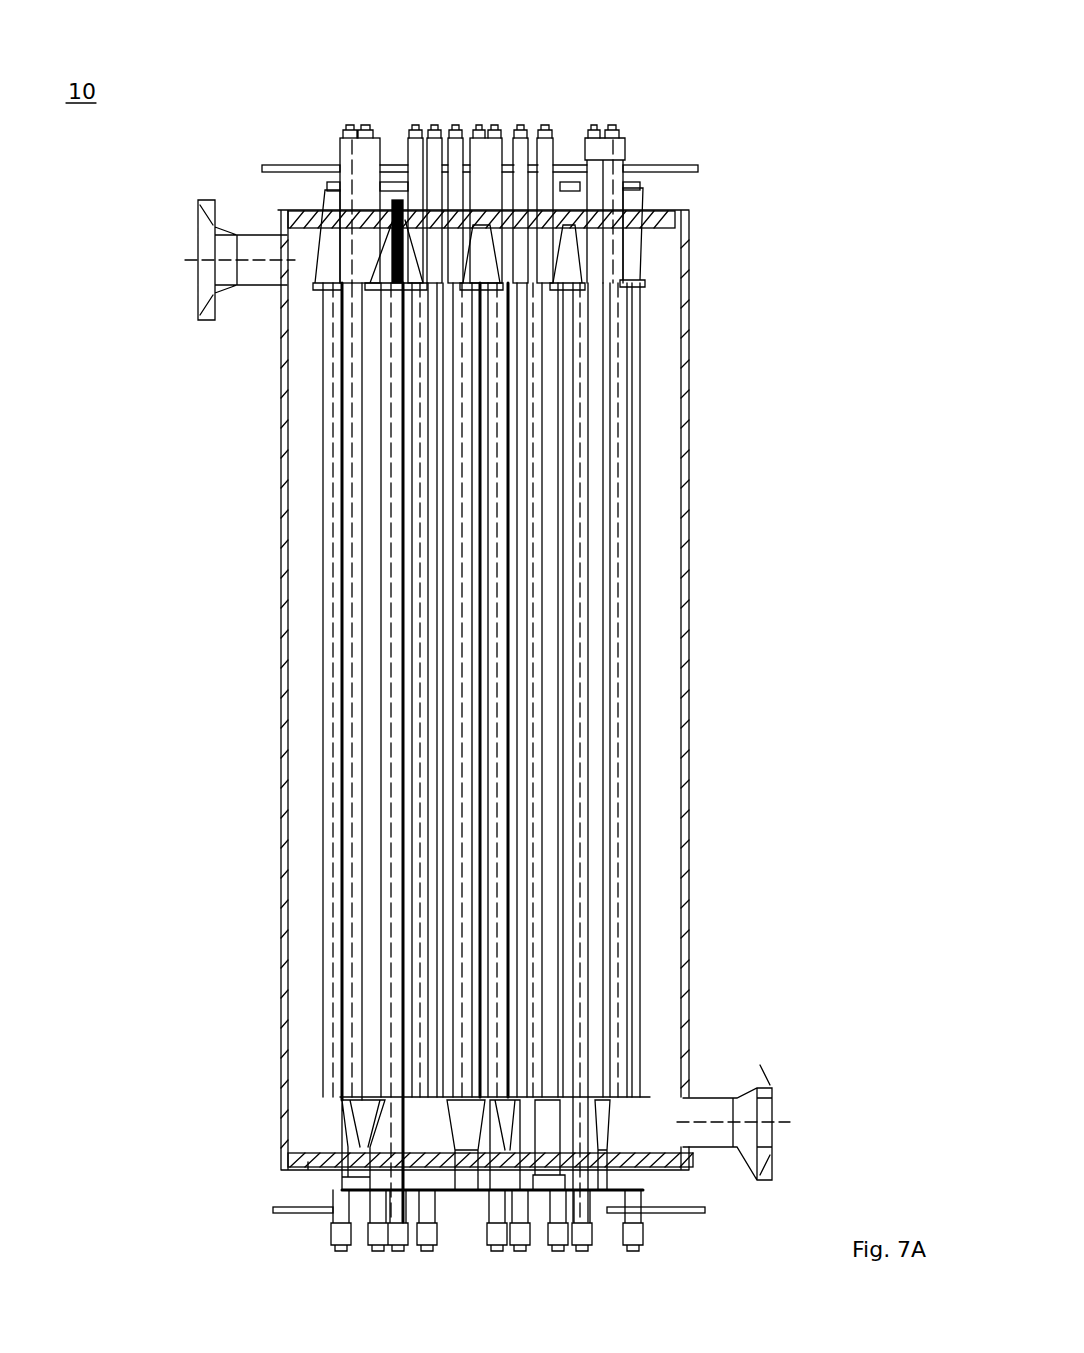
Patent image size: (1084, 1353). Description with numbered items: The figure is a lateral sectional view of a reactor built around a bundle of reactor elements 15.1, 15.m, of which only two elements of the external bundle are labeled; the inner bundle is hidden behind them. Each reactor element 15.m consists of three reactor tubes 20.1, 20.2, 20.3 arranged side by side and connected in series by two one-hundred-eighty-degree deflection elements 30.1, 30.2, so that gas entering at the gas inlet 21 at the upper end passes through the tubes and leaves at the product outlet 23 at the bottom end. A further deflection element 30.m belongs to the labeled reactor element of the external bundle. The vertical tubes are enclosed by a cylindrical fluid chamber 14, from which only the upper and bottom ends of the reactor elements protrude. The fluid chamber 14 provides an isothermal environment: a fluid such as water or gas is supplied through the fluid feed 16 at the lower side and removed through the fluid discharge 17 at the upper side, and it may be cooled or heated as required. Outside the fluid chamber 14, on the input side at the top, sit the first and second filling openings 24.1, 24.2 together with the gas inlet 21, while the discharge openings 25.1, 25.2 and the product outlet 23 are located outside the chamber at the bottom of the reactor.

The fluid chamber 14 is at (689, 856).
The reactor element 15.1 is at (332, 748).
The reactor element 15.m is at (638, 583).
The fluid feed 16 is at (772, 1104).
The fluid discharge 17 is at (198, 241).
The reactor tube 20.1 is at (345, 443).
The reactor tube 20.2 is at (582, 998).
The reactor tube 20.3 is at (322, 548).
The gas inlet 21 is at (290, 165).
The product outlet 23 is at (278, 1211).
The first filling opening 24.1 is at (593, 128).
The second filling opening 24.2 is at (393, 198).
The discharge opening 25.1 is at (645, 1250).
The discharge opening 25.2 is at (354, 1250).
The deflection element 30.1 is at (312, 278).
The deflection element 30.2 is at (347, 1108).
The deflection element 30.m is at (646, 253).